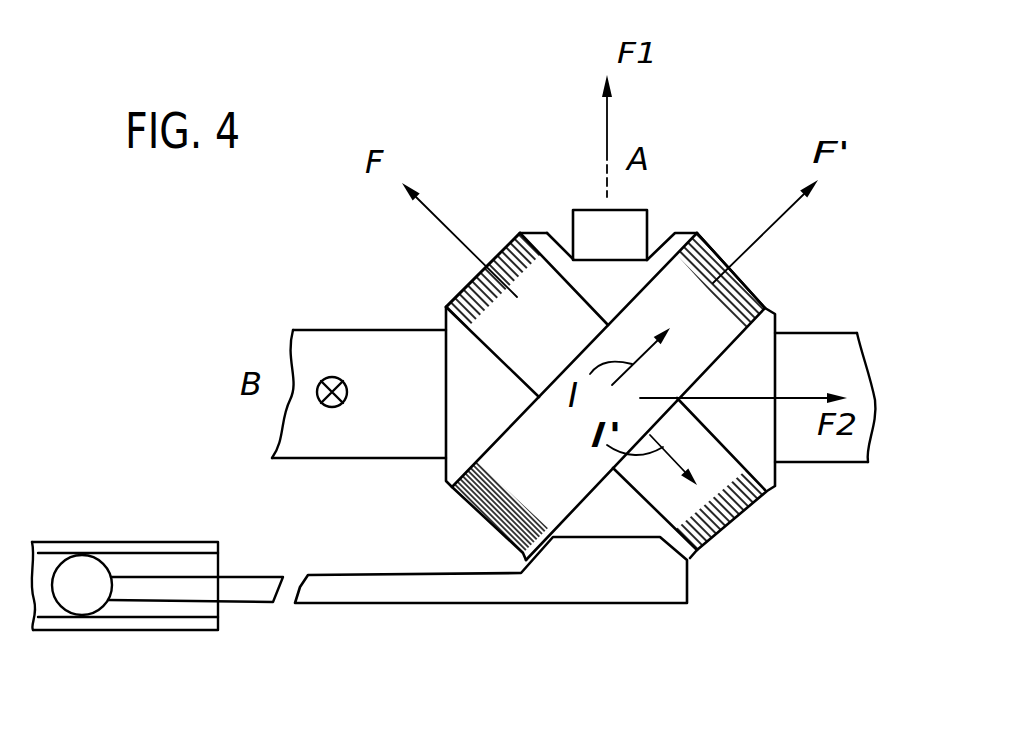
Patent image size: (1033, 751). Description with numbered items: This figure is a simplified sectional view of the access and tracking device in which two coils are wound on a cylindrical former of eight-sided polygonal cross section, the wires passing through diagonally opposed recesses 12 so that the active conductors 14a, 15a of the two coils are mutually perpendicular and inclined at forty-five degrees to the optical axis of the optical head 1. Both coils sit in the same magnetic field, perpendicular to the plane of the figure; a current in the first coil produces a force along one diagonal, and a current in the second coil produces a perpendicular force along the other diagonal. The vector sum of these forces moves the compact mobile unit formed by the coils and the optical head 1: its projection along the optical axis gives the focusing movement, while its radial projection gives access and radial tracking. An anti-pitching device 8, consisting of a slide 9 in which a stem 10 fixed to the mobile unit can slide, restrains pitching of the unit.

The optical head 1 is at (585, 207).
The anti-pitching device 8 is at (355, 577).
The slide 9 is at (202, 543).
The stem 10 is at (82, 570).
The recesses 12 is at (700, 233).
The active conductors of the first coil 14a is at (740, 283).
The active conductors of the second coil 15a is at (497, 247).